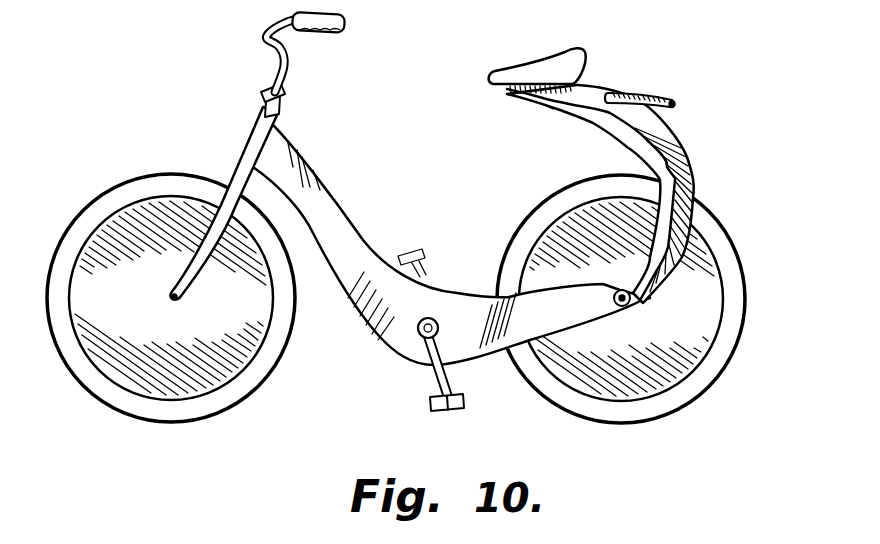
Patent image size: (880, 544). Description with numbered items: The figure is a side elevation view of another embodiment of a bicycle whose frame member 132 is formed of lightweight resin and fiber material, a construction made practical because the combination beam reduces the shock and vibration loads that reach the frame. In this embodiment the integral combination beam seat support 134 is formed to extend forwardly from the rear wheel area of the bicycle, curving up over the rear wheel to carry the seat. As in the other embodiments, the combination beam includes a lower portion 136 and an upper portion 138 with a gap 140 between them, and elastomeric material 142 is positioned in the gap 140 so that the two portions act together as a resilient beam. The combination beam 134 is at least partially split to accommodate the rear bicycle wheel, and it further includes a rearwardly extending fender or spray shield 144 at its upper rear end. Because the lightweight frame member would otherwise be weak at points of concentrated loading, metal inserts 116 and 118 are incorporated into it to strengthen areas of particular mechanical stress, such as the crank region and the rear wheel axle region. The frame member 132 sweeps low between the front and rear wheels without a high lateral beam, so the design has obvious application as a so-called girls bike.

The metal insert 116 is at (407, 335).
The metal insert 118 is at (630, 297).
The lightweight resin and fiber frame member 132 is at (347, 220).
The integral combination beam seat support 134 is at (558, 123).
The lower portion 136 is at (598, 120).
The upper portion 138 is at (680, 150).
The gap 140 is at (505, 88).
The elastomeric material 142 is at (572, 87).
The fender or spray shield 144 is at (672, 104).